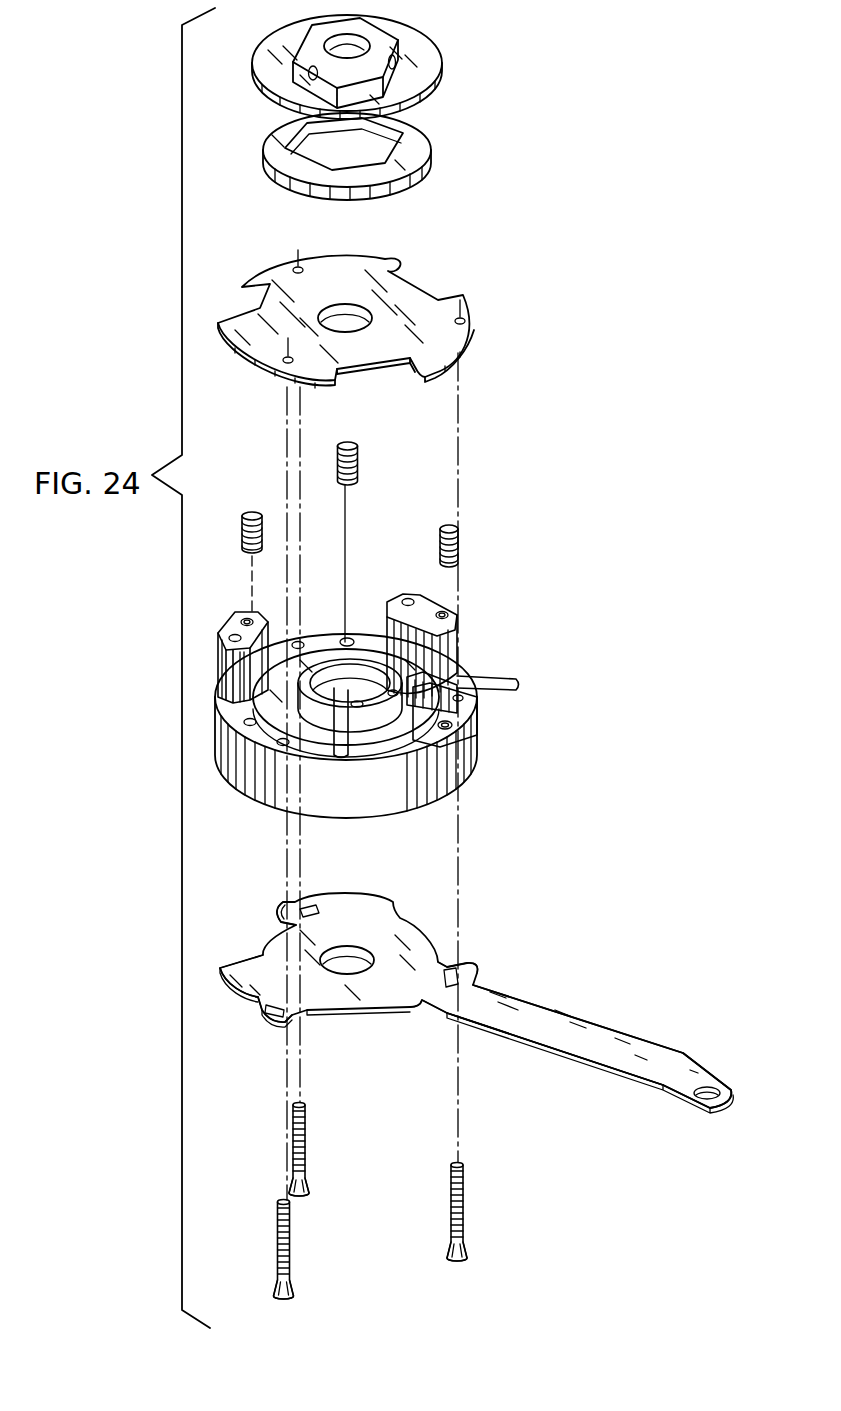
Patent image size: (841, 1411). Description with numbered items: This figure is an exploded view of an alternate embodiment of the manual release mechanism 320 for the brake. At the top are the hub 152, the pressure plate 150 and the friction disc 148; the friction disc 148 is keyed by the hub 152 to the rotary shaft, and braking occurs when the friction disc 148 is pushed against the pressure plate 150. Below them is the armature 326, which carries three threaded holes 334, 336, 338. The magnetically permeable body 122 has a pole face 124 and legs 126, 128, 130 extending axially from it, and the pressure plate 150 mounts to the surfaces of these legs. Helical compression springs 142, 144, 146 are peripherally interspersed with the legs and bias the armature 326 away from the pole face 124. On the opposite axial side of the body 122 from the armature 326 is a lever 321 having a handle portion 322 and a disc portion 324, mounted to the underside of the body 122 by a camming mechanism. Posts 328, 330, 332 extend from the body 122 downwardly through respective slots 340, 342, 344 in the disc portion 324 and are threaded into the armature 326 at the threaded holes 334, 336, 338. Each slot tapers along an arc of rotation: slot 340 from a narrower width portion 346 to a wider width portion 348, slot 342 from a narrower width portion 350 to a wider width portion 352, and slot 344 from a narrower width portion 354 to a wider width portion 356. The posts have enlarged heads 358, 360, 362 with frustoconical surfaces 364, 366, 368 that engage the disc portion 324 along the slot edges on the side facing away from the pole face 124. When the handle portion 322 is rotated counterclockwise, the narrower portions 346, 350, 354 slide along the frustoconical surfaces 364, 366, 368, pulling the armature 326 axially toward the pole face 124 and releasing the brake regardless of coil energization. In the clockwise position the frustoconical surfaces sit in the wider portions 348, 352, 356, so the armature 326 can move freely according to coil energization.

The hub 152 is at (367, 25).
The pressure plate 150 is at (423, 80).
The friction disc 148 is at (415, 155).
The armature 326 is at (367, 318).
The threaded hole 338 is at (300, 268).
The threaded hole 336 is at (283, 365).
The threaded hole 334 is at (463, 318).
The helical compression spring 146 is at (340, 468).
The helical compression spring 144 is at (242, 537).
The helical compression spring 142 is at (460, 551).
The magnetically permeable body 122 is at (378, 700).
The leg 130 is at (228, 640).
The leg 126 is at (427, 593).
The pole face 124 is at (443, 737).
The leg 128 is at (382, 723).
The manual release mechanism 320 is at (461, 986).
The disc portion 324 is at (461, 982).
The handle portion 322 is at (545, 1018).
The lever 321 is at (502, 1058).
The narrower width portion 354 is at (343, 903).
The wider width portion 356 is at (290, 907).
The slot 344 is at (317, 912).
The slot 342 is at (268, 967).
The slot 340 is at (447, 983).
The wider width portion 348 is at (468, 968).
The narrower width portion 350 is at (252, 1008).
The wider width portion 352 is at (290, 1013).
The narrower width portion 346 is at (448, 1020).
The post 332 is at (340, 1149).
The frustoconical surface 368 is at (308, 1182).
The enlarged head 362 is at (310, 1197).
The post 330 is at (327, 1265).
The frustoconical surface 366 is at (287, 1283).
The enlarged head 360 is at (287, 1297).
The post 328 is at (496, 1224).
The frustoconical surface 364 is at (465, 1243).
The enlarged head 358 is at (462, 1257).